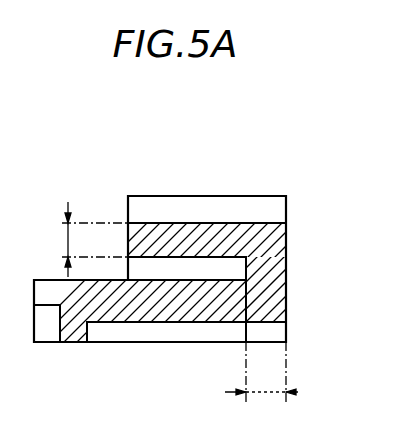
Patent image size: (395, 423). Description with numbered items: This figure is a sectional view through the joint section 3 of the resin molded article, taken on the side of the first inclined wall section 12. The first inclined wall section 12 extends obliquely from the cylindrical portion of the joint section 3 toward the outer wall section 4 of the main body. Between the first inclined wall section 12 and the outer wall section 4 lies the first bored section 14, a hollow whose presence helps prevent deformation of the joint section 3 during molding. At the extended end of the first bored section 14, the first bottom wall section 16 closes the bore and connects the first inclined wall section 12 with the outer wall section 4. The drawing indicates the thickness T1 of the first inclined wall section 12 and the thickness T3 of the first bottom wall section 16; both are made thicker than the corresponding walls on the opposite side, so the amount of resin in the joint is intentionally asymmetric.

The joint section 3 is at (253, 178).
The outer wall section 4 is at (210, 313).
The first inclined wall section 12 is at (172, 233).
The first bored section 14 is at (148, 268).
The first bottom wall section 16 is at (272, 262).
The thickness of the first inclined wall section T1 is at (84, 239).
The thickness of the first bottom wall section T3 is at (261, 377).